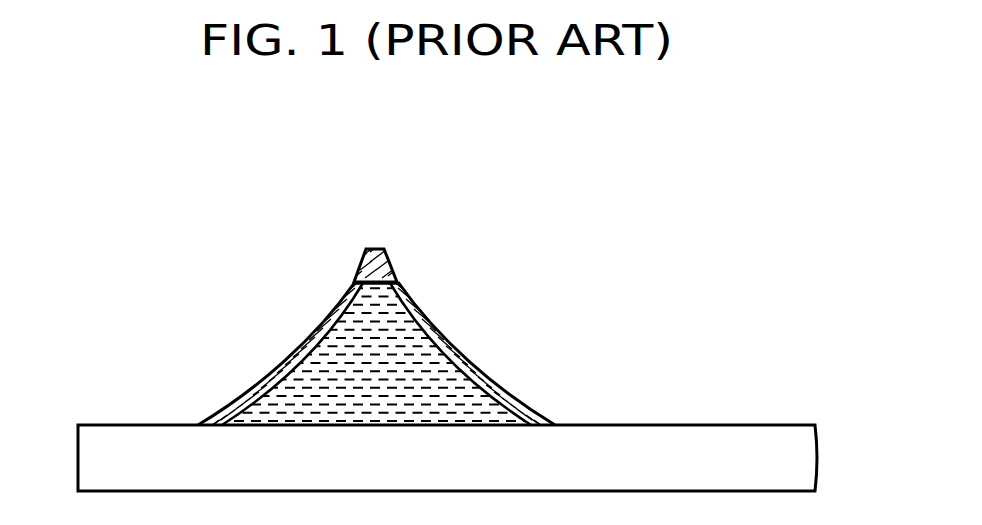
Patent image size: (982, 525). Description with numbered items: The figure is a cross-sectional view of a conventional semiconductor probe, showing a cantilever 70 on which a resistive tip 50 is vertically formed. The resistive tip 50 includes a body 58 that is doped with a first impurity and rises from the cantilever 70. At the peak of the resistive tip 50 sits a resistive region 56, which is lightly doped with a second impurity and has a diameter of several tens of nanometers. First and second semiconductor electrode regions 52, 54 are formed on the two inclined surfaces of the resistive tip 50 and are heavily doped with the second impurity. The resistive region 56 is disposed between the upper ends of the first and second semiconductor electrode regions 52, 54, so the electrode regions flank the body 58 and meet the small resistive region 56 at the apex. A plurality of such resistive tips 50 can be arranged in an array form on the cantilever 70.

The resistive tip 50 is at (534, 271).
The first semiconductor electrode region 52 is at (295, 351).
The second semiconductor electrode region 54 is at (463, 355).
The resistive region 56 is at (388, 257).
The body 58 is at (393, 381).
The cantilever 70 is at (662, 437).